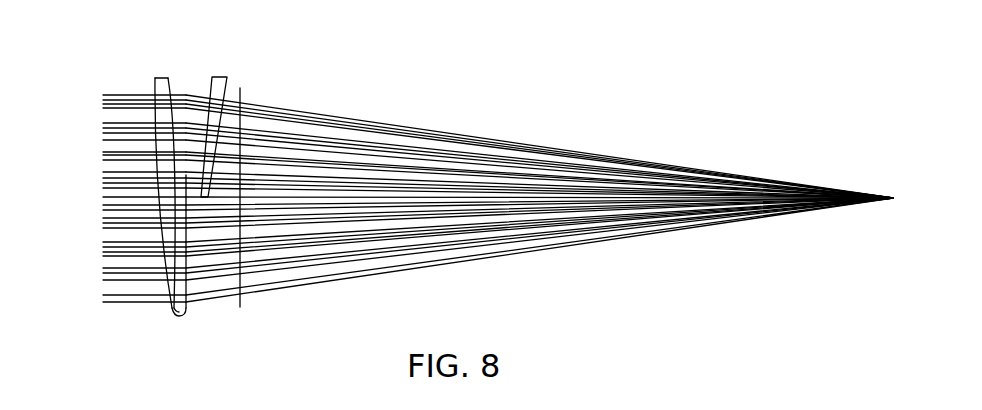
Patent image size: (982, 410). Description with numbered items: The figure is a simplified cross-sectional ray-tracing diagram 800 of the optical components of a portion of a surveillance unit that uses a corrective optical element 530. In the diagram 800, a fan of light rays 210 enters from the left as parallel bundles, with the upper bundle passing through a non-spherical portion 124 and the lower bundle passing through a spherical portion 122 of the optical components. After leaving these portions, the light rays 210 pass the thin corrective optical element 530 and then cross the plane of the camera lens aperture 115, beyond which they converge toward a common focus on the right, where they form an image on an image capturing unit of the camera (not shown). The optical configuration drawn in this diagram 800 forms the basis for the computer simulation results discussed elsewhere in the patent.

The cross-sectional diagram 800 is at (661, 78).
The non-spherical portion 124 is at (91, 85).
The spherical portion 122 is at (91, 202).
The corrective optical element 530 is at (224, 82).
The camera lens aperture 115 is at (242, 88).
The light rays 210 is at (526, 144).